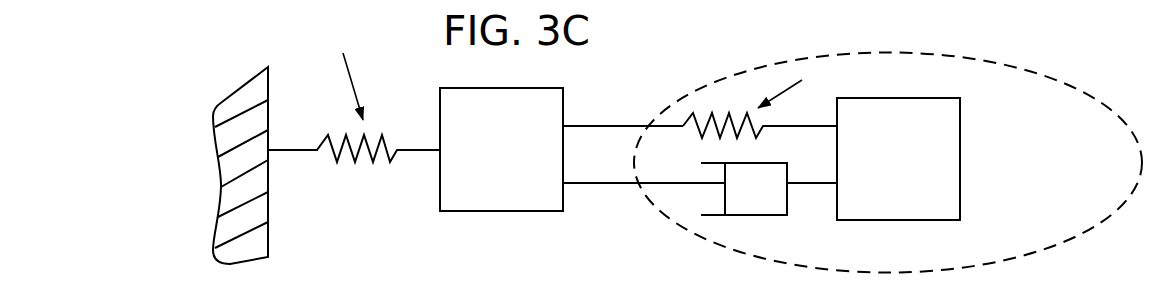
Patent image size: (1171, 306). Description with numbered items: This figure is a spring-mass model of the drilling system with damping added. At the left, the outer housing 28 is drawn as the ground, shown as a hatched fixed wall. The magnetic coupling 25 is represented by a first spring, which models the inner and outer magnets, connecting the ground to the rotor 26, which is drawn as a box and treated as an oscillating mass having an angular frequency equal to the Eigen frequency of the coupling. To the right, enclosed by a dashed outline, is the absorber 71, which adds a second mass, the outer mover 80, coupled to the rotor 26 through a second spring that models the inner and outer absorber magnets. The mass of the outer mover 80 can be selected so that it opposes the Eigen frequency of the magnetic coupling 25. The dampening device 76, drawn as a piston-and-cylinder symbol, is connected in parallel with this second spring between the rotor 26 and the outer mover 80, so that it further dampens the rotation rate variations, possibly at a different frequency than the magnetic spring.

The outer housing 28 is at (205, 103).
The magnetic coupling 25 is at (389, 195).
The rotor 26 is at (501, 149).
The absorber 71 is at (864, 145).
The dampening device 76 is at (745, 195).
The outer mover 80 is at (898, 159).